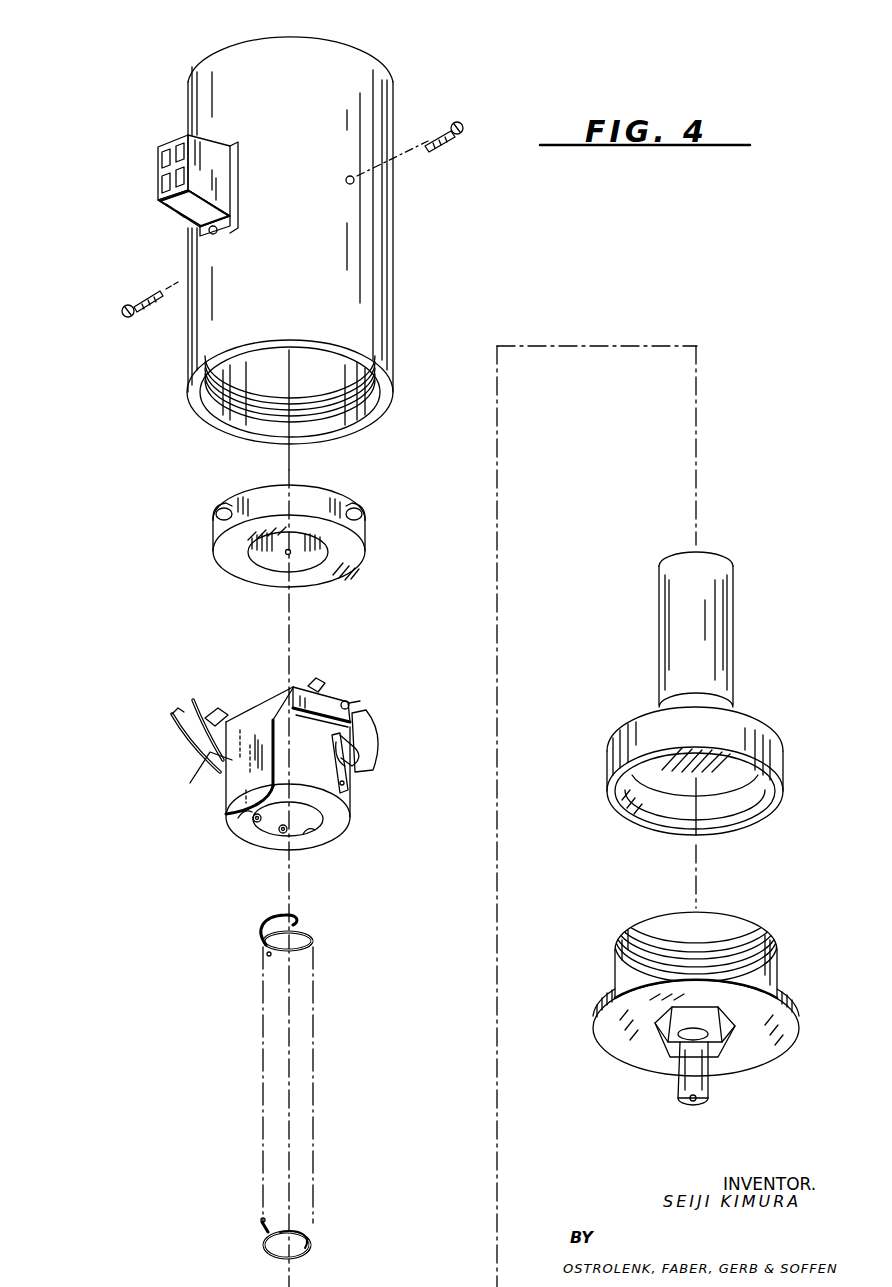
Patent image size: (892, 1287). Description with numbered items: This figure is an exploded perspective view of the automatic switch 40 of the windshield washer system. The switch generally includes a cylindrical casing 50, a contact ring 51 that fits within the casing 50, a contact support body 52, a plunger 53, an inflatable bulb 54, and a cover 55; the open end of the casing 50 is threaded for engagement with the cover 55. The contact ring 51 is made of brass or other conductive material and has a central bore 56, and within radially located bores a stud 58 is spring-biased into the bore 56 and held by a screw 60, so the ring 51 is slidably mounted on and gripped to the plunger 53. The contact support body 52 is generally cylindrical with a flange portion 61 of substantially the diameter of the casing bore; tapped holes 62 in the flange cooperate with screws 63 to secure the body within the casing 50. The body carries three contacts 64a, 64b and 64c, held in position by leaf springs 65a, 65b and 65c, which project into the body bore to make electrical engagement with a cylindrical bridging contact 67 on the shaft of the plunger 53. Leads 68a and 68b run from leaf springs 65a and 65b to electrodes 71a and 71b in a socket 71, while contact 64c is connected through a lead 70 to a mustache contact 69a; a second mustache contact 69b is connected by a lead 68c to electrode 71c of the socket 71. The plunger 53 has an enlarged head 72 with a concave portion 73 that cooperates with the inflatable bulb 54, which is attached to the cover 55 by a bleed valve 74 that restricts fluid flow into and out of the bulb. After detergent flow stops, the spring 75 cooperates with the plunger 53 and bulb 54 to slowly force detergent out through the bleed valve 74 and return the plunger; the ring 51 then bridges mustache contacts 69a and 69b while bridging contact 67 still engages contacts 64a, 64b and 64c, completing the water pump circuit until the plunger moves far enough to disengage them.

The automatic switch 40 is at (98, 801).
The cylindrical casing 50 is at (393, 246).
The contact ring 51 is at (293, 553).
The contact support body 52 is at (380, 749).
The plunger 53 is at (735, 657).
The inflatable bulb 54 is at (772, 953).
The cover 55 is at (780, 1019).
The bore 56 is at (318, 567).
The stud 58 is at (286, 556).
The screw 60 is at (219, 512).
The flange portion 61 is at (378, 728).
The tapped hole 62 is at (350, 705).
The screw 63 is at (464, 118).
The contact 64a is at (257, 823).
The contact 64b is at (282, 834).
The contact 64c is at (352, 826).
The leaf spring 65a is at (222, 822).
The leaf spring 65b is at (291, 822).
The leaf spring 65c is at (355, 793).
The cylindrical bridging contact 67 is at (718, 699).
The lead 68a is at (172, 721).
The lead 68b is at (198, 708).
The lead 68c is at (190, 777).
The mustache contact 69a is at (322, 687).
The mustache contact 69b is at (217, 715).
The lead 70 is at (362, 766).
The socket 71 is at (182, 224).
The electrode 71a is at (158, 188).
The electrode 71b is at (166, 210).
The electrode 71c is at (158, 160).
The enlarged head 72 is at (786, 773).
The concave portion 73 is at (762, 807).
The bleed valve 74 is at (712, 1043).
The spring 75 is at (313, 1100).